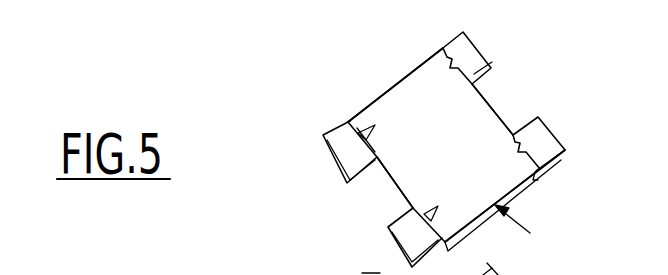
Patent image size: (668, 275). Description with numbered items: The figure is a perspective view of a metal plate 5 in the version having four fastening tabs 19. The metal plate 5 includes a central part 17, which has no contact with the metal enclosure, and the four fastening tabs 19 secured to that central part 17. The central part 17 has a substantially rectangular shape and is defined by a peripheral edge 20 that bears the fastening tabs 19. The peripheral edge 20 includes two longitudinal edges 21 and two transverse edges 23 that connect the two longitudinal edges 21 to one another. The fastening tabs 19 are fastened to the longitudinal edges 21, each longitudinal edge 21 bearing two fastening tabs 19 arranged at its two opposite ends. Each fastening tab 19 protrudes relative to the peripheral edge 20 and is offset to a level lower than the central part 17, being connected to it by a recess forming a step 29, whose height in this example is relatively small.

The metal plate 5 is at (425, 268).
The central part 17 is at (402, 97).
The fastening tabs 19 is at (345, 151).
The peripheral edge 20 is at (530, 233).
The longitudinal edges 21 is at (486, 102).
The transverse edges 23 is at (361, 112).
The step 29 is at (357, 130).